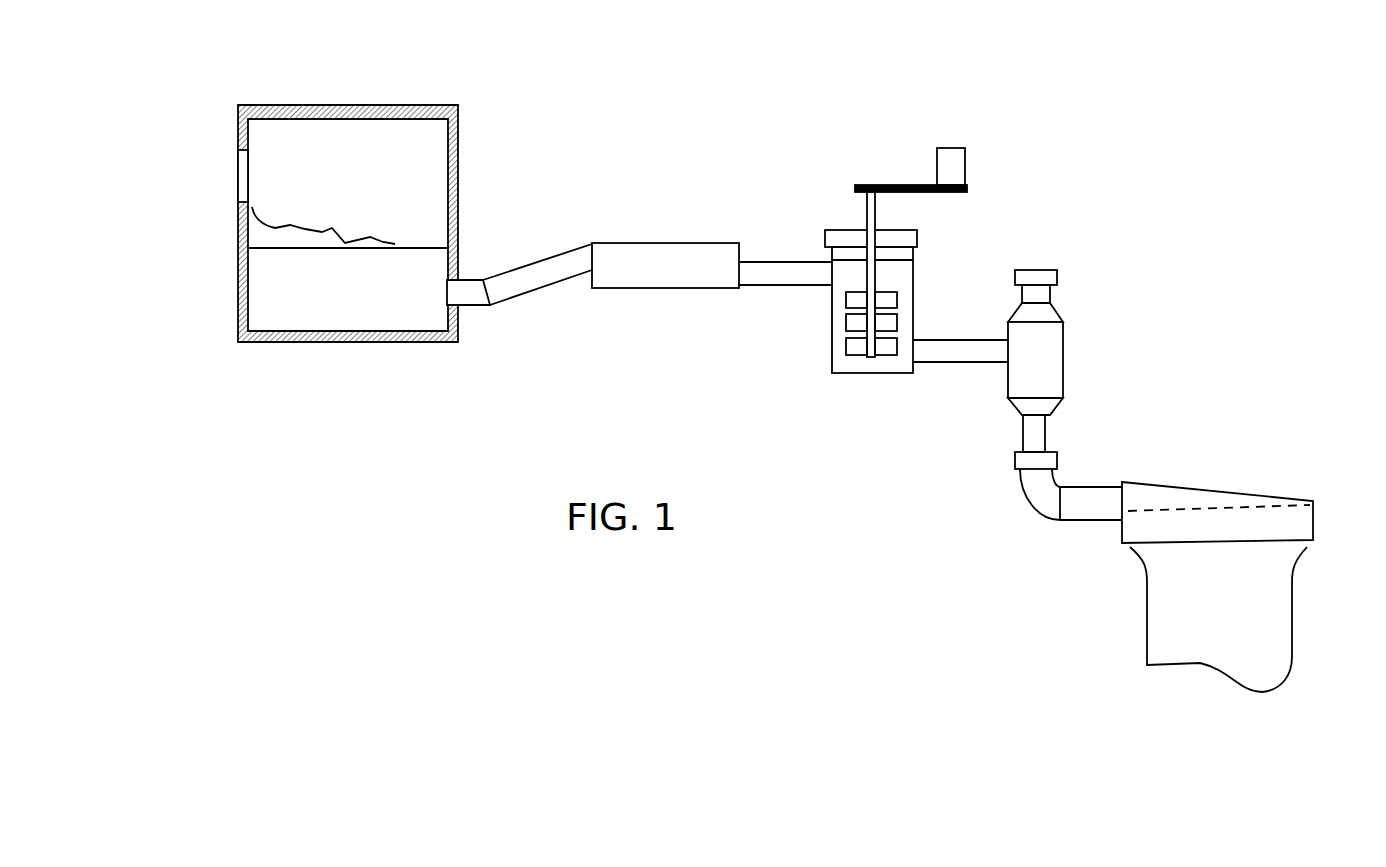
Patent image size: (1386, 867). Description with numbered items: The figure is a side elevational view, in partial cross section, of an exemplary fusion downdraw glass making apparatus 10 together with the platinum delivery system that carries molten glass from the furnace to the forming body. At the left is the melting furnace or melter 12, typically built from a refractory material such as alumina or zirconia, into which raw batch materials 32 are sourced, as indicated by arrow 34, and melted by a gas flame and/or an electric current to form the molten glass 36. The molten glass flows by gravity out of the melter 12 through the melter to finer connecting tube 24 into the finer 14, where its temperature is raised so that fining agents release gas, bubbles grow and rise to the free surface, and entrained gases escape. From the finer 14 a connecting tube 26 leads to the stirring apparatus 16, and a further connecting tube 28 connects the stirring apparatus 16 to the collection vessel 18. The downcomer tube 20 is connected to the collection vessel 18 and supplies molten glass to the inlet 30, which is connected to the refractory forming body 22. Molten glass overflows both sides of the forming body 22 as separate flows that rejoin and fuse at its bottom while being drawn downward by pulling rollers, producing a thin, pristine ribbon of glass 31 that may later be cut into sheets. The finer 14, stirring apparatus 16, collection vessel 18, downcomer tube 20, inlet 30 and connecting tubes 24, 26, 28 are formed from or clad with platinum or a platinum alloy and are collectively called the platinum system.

The glass making apparatus 10 is at (791, 140).
The melting furnace 12 is at (363, 103).
The finer 14 is at (660, 242).
The stirring apparatus 16 is at (833, 360).
The collection vessel 18 is at (1067, 357).
The downcomer tube 20 is at (1023, 432).
The forming body 22 is at (1314, 522).
The melter to finer connecting tube 24 is at (567, 250).
The connecting tube 26 is at (777, 286).
The connecting tube 28 is at (957, 364).
The inlet 30 is at (1077, 522).
The ribbon of glass 31 is at (1293, 630).
The batch materials 32 is at (293, 227).
The arrow 34 is at (222, 173).
The molten glass 36 is at (352, 292).